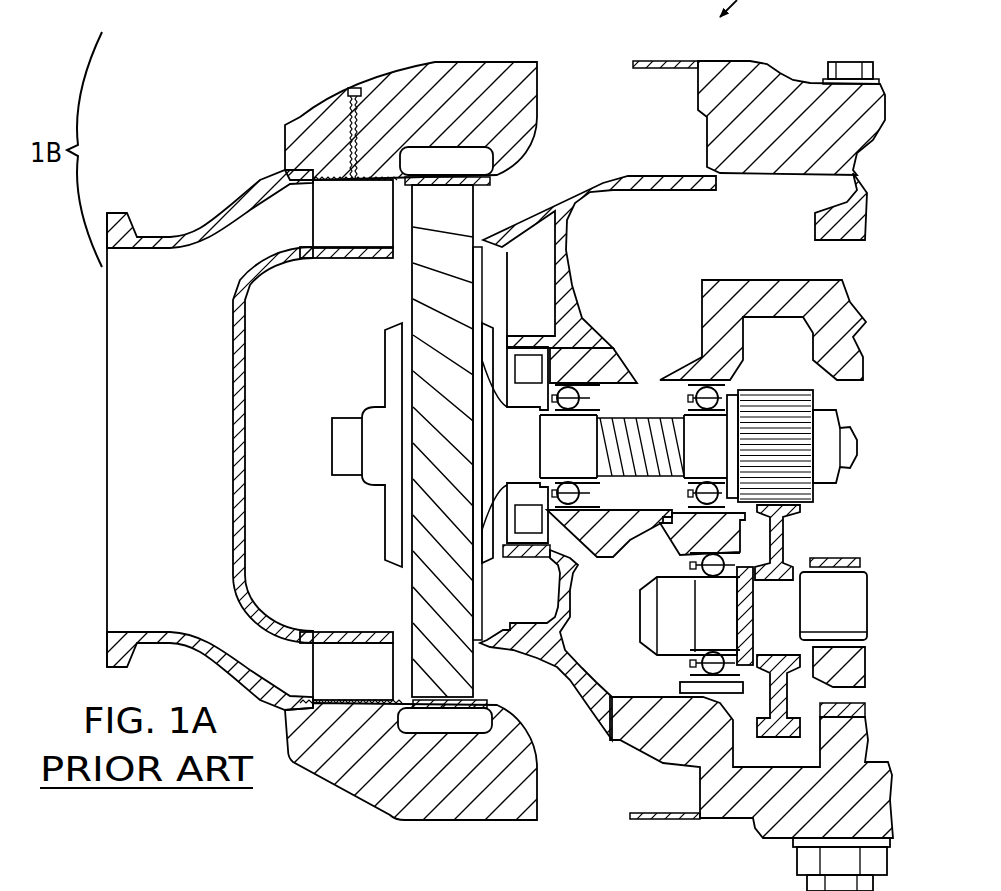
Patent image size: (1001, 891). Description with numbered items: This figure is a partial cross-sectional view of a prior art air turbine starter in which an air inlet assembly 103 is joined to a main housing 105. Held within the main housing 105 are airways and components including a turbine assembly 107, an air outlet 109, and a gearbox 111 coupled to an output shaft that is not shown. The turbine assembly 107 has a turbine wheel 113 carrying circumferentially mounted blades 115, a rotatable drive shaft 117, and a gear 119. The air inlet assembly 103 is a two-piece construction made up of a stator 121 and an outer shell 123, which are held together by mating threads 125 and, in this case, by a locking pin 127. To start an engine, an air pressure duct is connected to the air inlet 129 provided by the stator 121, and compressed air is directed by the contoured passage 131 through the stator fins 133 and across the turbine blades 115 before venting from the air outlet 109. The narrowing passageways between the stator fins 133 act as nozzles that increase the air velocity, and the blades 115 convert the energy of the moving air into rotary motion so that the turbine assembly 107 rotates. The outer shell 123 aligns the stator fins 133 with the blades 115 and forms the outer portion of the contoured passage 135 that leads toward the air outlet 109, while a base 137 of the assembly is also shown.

The air inlet assembly 103 is at (256, 176).
The main housing 105 is at (748, 62).
The turbine assembly 107 is at (398, 293).
The air outlet 109 is at (630, 63).
The gearbox 111 is at (880, 437).
The turbine wheel 113 is at (395, 367).
The blades 115 is at (433, 603).
The rotatable drive shaft 117 is at (353, 443).
The gear 119 is at (753, 407).
The stator 121 is at (226, 433).
The outer shell 123 is at (197, 213).
The mating threads 125 is at (313, 173).
The locking pin 127 is at (350, 93).
The air inlet 129 is at (107, 425).
The contoured passage 131 is at (235, 274).
The stator fins 133 is at (373, 229).
The contoured passage 135 is at (602, 128).
The base 137 is at (317, 885).